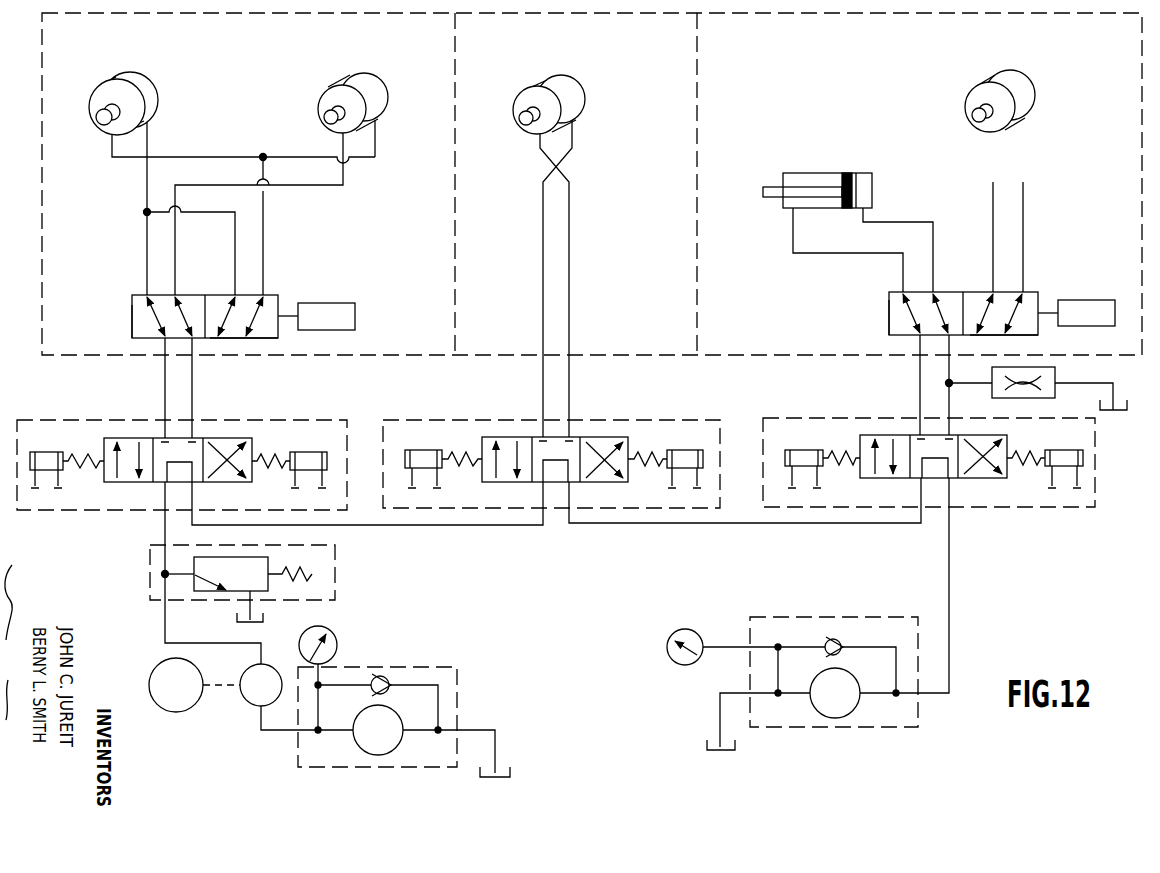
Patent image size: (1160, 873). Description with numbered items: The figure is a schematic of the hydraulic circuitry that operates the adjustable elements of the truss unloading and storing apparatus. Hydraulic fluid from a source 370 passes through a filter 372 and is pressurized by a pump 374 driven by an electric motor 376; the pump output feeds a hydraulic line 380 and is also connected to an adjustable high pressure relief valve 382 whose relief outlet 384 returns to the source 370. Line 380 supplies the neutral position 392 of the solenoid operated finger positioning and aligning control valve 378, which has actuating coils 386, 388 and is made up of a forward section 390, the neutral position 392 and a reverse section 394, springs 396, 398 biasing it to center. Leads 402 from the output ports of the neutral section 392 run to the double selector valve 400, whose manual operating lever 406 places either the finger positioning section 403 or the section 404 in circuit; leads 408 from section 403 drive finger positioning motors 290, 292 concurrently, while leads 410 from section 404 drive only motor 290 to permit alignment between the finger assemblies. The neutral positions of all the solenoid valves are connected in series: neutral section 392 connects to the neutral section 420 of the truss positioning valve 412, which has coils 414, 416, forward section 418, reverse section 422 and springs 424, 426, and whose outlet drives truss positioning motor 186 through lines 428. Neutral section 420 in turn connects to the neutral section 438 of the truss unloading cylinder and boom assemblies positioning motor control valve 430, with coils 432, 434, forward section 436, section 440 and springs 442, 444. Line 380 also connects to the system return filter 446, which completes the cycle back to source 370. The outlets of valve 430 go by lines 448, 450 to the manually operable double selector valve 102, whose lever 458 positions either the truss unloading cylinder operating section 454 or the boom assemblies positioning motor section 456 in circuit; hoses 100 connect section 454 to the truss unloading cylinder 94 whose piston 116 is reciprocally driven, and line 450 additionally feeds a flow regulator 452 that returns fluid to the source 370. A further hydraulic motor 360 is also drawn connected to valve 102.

The finger positioning motor 290 is at (159, 85).
The finger positioning motor 292 is at (375, 72).
The truss positioning motor 186 is at (586, 82).
The solenoid 360 is at (987, 79).
The piston 116 is at (770, 187).
The truss unloading cylinder 94 is at (805, 170).
The hoses 100 is at (895, 222).
The double selector valve 102 is at (979, 270).
The lever 458 is at (1115, 301).
The truss unloading cylinder operating section 454 is at (889, 314).
The boom assemblies positioning motor section 456 is at (1030, 336).
The leads 410 is at (265, 250).
The leads 408 is at (175, 255).
The double selector valve 400 is at (220, 302).
The manual operating lever 406 is at (345, 303).
The finger positioning section 403 is at (132, 322).
The section 404 is at (262, 338).
The lines 428 is at (570, 246).
The leads 402 is at (192, 372).
The neutral position 392 is at (158, 437).
The finger positioning and aligning control valve 378 is at (182, 448).
The actuating coil 386 is at (65, 452).
The actuating coil 388 is at (322, 452).
The spring 396 is at (85, 468).
The forward section 390 is at (141, 482).
The reverse section 394 is at (216, 482).
The spring 398 is at (270, 470).
The truss positioning valve 412 is at (551, 447).
The actuating coil 414 is at (425, 450).
The spring 424 is at (468, 452).
The spring 426 is at (655, 440).
The actuating coil 416 is at (694, 450).
The forward section 418 is at (496, 483).
The neutral section 420 is at (536, 483).
The reverse section 422 is at (605, 483).
The line 448 is at (921, 368).
The flow regulator 452 is at (1057, 375).
The truss unloading cylinder and boom assemblies positioning motor control valve 430 is at (929, 445).
The line 450 is at (950, 418).
The actuating coil 432 is at (805, 451).
The spring 442 is at (840, 452).
The spring 444 is at (1032, 452).
The actuating coil 434 is at (1078, 437).
The forward section 436 is at (872, 480).
The neutral section 438 is at (915, 480).
The section 440 is at (975, 480).
The source 370 is at (1113, 410).
The high pressure relief valve 382 is at (266, 586).
The relief outlet 384 is at (253, 597).
The hydraulic line 380 is at (457, 526).
The filter 372 is at (438, 667).
The electric motor 376 is at (176, 712).
The pump 374 is at (246, 702).
The return filter 446 is at (860, 617).